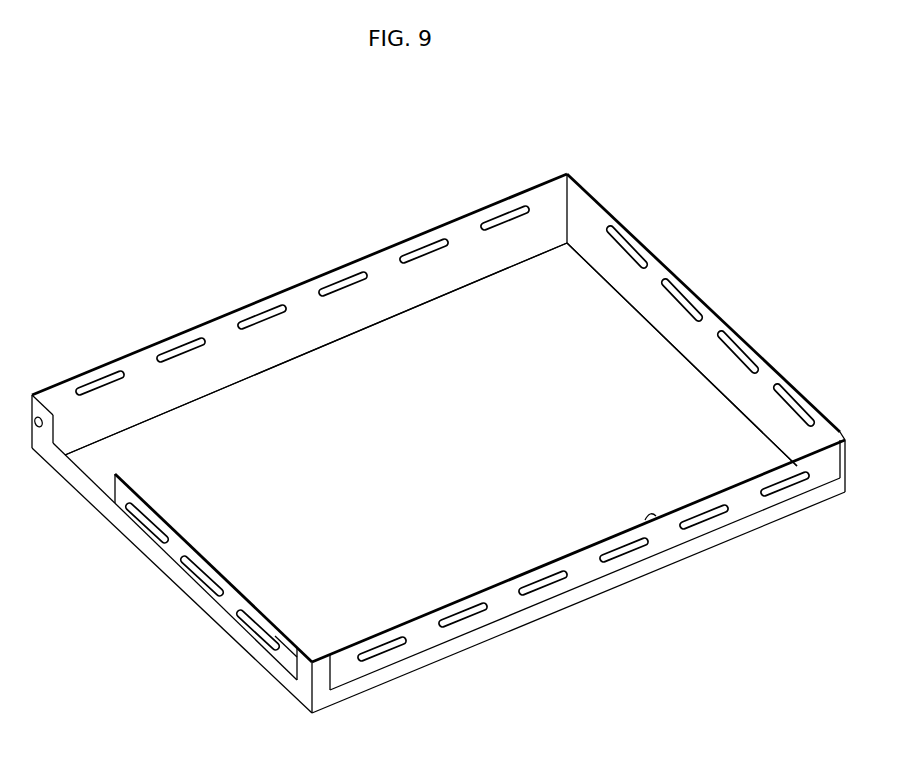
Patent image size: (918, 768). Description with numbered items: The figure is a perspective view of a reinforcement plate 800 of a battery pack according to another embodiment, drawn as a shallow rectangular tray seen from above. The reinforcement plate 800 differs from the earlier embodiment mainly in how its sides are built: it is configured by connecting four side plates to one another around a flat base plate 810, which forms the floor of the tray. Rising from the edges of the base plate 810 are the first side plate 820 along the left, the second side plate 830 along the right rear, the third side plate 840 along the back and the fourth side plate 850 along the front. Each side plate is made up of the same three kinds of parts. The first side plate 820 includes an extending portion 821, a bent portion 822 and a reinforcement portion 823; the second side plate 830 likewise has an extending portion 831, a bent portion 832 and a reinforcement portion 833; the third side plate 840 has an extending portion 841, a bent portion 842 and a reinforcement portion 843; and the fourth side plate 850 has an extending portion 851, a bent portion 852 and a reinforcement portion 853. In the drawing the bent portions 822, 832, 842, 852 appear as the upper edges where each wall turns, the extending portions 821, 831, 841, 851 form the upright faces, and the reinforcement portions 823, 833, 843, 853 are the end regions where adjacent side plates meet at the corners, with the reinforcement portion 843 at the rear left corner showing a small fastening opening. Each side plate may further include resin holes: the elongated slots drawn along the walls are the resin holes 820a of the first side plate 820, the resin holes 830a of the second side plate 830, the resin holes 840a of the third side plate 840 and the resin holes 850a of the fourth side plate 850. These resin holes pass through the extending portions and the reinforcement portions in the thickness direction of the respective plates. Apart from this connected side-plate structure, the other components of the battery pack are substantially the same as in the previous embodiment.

The reinforcement plate 800 is at (303, 172).
The base plate 810 is at (573, 293).
The first side plate 820 is at (172, 578).
The extending portion 821 is at (127, 530).
The bent portion 822 is at (180, 540).
The reinforcement portion 823 is at (235, 600).
The resin holes 820a is at (262, 638).
The second side plate 830 is at (727, 333).
The extending portion 831 is at (650, 287).
The bent portion 832 is at (770, 367).
The reinforcement portion 833 is at (841, 430).
The resin holes 830a is at (723, 343).
The third side plate 840 is at (289, 314).
The extending portion 841 is at (140, 383).
The bent portion 842 is at (258, 300).
The reinforcement portion 843 is at (40, 388).
The resin holes 840a is at (185, 347).
The fourth side plate 850 is at (578, 576).
The extending portion 851 is at (590, 598).
The bent portion 852 is at (655, 520).
The reinforcement portion 853 is at (505, 603).
The resin holes 850a is at (705, 520).